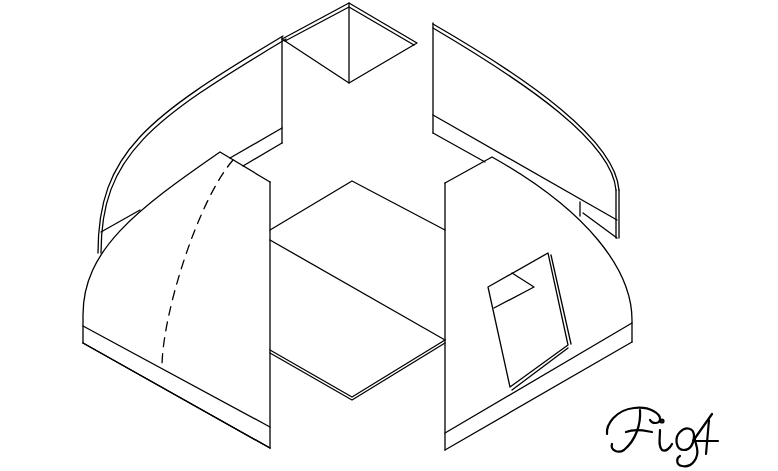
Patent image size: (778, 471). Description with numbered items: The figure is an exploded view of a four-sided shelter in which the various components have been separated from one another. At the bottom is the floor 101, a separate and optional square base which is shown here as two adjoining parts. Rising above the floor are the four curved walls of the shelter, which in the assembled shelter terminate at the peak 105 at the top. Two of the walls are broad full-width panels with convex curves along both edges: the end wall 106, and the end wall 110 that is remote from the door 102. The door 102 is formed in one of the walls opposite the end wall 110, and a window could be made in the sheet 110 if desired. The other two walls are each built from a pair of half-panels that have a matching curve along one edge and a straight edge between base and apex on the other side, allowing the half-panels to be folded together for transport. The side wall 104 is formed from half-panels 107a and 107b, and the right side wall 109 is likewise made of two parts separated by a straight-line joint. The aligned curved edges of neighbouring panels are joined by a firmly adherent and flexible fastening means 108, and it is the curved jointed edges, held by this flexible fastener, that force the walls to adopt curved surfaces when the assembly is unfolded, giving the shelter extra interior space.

The floor 101 is at (323, 374).
The door 102 is at (550, 323).
The side wall 104 is at (162, 340).
The peak 105 is at (317, 33).
The end wall 106 is at (472, 386).
The half-panel 107a is at (118, 278).
The half-panel 107b is at (190, 360).
The fastening means 108 is at (580, 202).
The right side wall 109 is at (518, 97).
The end wall 110 is at (162, 118).